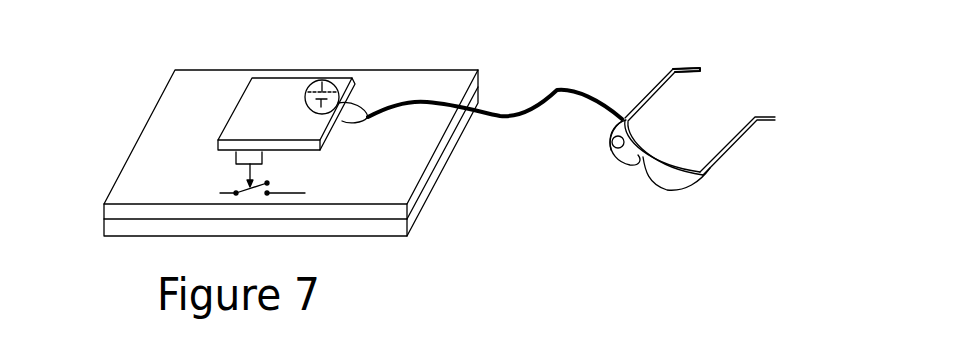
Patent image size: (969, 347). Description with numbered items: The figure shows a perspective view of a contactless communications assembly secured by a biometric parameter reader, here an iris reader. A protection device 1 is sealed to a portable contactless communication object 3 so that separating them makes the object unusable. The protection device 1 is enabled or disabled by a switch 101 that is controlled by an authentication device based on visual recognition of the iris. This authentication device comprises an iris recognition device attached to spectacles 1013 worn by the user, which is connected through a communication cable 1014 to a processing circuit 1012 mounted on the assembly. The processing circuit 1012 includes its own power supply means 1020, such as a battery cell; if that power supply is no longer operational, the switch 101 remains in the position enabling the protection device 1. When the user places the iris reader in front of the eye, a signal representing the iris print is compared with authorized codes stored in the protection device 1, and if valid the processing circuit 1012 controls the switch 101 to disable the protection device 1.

The protection device 1 is at (108, 213).
The portable contactless communication object 3 is at (104, 233).
The switch 101 is at (243, 188).
The processing circuit 1012 is at (278, 105).
The communication cable 1014 is at (557, 88).
The spectacles 1013 is at (630, 130).
The power supply means 1020 is at (333, 90).